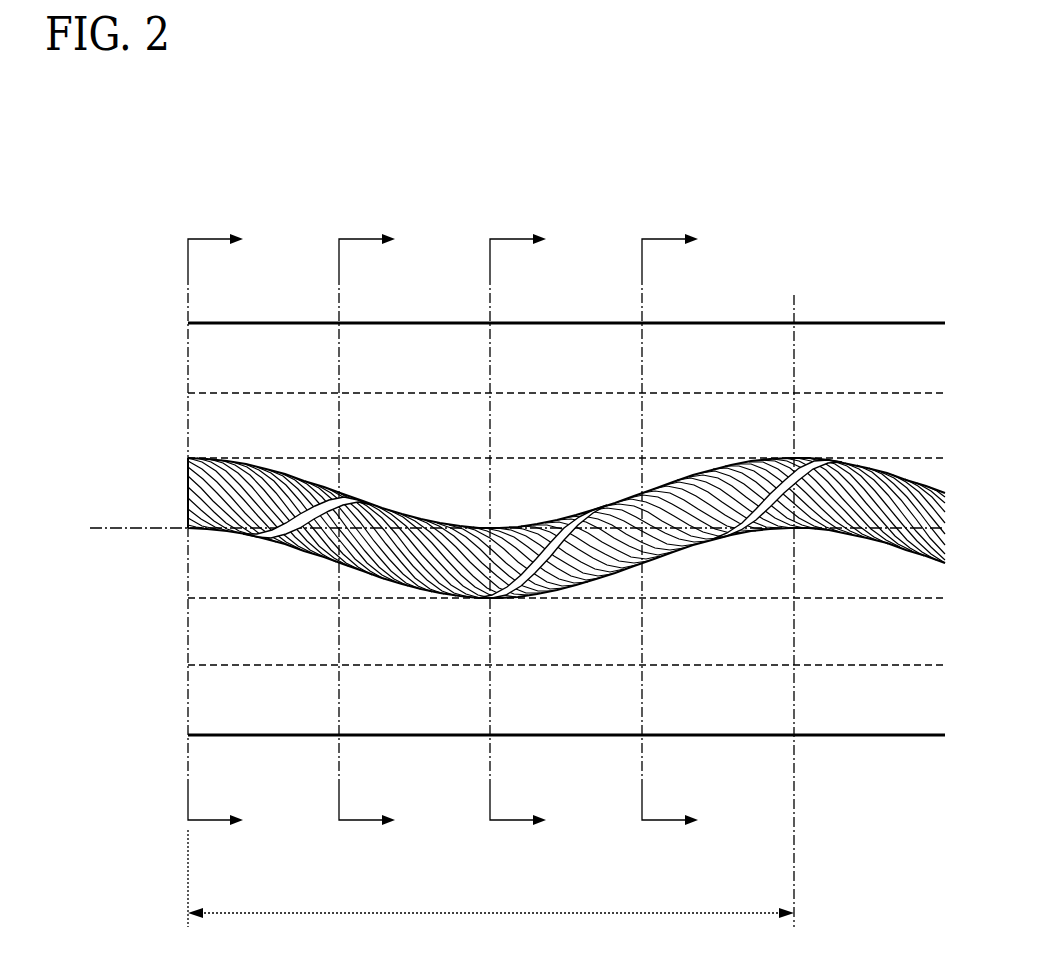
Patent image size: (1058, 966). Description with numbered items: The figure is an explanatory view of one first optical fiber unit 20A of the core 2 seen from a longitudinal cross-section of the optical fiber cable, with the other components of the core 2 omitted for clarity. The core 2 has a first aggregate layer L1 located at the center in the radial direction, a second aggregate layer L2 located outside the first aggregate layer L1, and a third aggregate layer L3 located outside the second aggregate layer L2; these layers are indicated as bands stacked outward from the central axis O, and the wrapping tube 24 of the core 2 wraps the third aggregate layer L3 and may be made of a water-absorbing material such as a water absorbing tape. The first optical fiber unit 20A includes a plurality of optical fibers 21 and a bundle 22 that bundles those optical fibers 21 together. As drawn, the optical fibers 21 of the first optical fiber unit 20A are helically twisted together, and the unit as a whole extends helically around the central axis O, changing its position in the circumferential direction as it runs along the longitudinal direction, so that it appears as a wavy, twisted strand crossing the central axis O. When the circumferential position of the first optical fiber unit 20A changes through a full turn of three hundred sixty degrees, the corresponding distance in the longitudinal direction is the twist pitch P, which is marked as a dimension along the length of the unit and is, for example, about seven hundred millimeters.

The core 2 is at (185, 197).
The wrapping tube 24 is at (223, 322).
The first optical fiber unit 20A is at (124, 414).
The bundle 22 is at (307, 508).
The optical fibers 21 is at (228, 486).
The central axis O is at (505, 530).
The first aggregate layer L1 is at (197, 563).
The second aggregate layer L2 is at (197, 632).
The third aggregate layer L3 is at (197, 700).
The twist pitch P is at (491, 891).